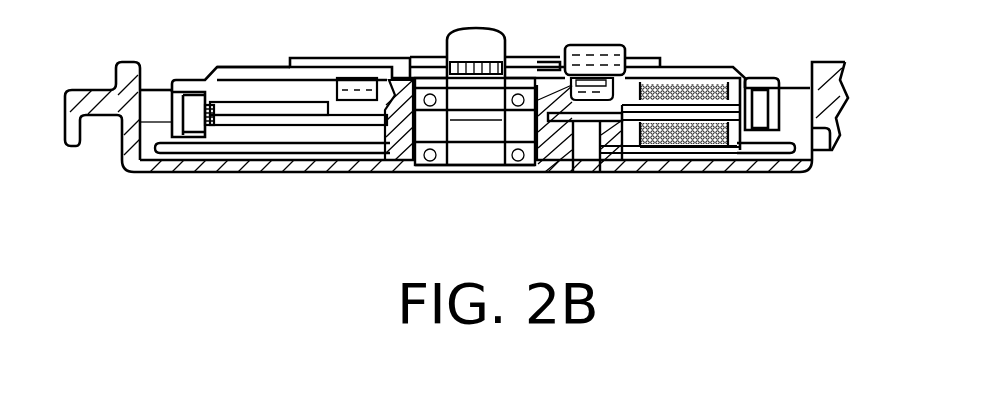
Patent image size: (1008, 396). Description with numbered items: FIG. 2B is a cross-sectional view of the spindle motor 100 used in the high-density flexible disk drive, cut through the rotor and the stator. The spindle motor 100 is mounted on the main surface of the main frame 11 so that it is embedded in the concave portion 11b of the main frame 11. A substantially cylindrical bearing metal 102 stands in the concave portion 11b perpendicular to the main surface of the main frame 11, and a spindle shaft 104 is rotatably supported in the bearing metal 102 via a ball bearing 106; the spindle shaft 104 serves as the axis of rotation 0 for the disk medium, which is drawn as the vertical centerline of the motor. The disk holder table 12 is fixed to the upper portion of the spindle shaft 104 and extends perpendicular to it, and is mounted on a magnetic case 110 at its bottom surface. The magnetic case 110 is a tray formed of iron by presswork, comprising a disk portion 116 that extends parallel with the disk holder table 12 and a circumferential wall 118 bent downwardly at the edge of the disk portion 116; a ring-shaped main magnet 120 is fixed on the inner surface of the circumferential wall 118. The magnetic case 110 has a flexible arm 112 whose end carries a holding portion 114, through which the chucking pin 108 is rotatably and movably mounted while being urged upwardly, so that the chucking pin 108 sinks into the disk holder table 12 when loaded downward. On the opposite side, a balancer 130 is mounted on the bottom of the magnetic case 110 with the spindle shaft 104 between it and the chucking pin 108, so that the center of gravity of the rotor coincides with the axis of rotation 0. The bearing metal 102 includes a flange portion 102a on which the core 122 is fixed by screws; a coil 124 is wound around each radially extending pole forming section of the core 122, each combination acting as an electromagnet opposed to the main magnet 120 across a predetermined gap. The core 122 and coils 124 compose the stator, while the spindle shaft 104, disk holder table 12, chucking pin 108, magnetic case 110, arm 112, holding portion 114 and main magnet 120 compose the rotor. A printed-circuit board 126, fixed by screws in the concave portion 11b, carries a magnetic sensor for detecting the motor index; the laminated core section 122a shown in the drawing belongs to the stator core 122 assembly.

The main frame 11 is at (836, 62).
The concave portion 11b is at (794, 98).
The disk holder table 12 is at (341, 62).
The spindle motor 100 is at (218, 68).
The bearing metal 102 is at (395, 120).
The flange portion 102a is at (605, 160).
The spindle shaft 104 is at (492, 32).
The ball bearing 106 is at (520, 165).
The chucking pin 108 is at (618, 48).
The magnetic case 110 is at (702, 67).
The flexible arm 112 is at (563, 150).
The holding portion 114 is at (648, 153).
The disk portion 116 is at (241, 67).
The circumferential wall 118 is at (170, 120).
The main magnet 120 is at (196, 137).
The core 122 is at (344, 125).
The plate 122a is at (727, 153).
The coil 124 is at (700, 153).
The printed-circuit board 126 is at (263, 153).
The balancer 130 is at (363, 80).
The unidentified 0 is at (474, 152).